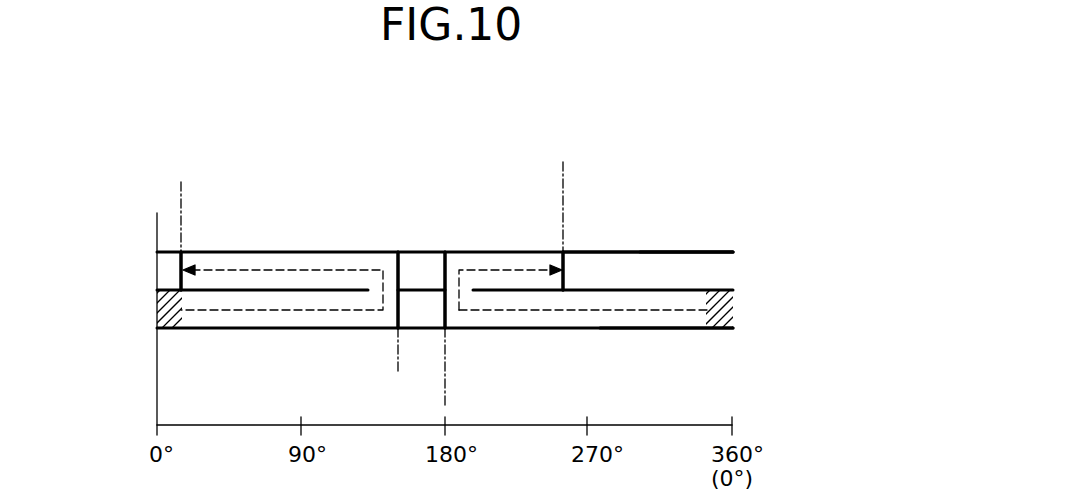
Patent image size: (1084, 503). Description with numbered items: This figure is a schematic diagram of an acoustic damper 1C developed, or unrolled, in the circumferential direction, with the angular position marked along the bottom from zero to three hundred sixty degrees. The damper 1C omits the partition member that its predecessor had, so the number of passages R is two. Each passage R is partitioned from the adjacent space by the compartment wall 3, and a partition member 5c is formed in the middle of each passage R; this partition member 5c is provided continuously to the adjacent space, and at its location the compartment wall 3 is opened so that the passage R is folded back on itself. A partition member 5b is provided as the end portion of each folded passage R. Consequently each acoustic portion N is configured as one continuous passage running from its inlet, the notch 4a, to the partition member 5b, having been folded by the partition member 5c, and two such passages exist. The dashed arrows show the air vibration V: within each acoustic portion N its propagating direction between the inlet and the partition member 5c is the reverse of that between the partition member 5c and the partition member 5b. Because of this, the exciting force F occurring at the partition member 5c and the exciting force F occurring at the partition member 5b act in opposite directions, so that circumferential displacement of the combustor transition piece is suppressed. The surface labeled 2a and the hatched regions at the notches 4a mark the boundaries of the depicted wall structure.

The acoustic damper 1C is at (527, 167).
The inner peripheral surface 2a is at (682, 250).
The compartment wall 3 is at (627, 288).
The notch 4a is at (190, 318).
The partition member 5b is at (183, 258).
The partition member 5c is at (445, 270).
The acoustic portion N is at (253, 320).
The passage R is at (307, 320).
The air vibration V is at (246, 270).
The exciting force F is at (181, 195).